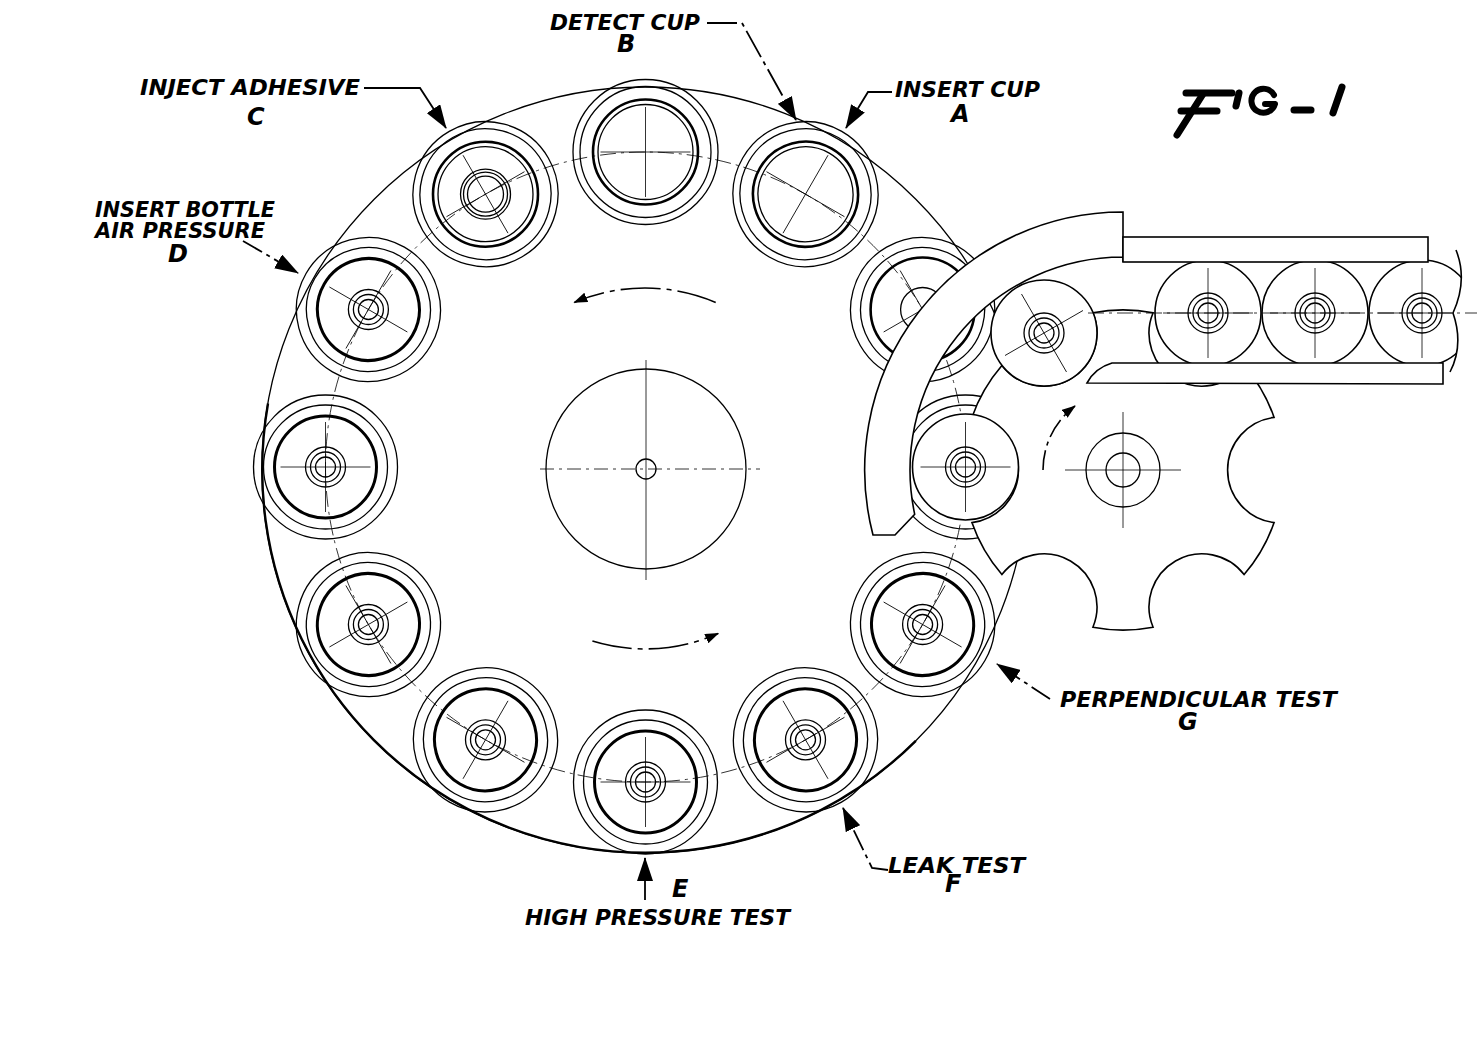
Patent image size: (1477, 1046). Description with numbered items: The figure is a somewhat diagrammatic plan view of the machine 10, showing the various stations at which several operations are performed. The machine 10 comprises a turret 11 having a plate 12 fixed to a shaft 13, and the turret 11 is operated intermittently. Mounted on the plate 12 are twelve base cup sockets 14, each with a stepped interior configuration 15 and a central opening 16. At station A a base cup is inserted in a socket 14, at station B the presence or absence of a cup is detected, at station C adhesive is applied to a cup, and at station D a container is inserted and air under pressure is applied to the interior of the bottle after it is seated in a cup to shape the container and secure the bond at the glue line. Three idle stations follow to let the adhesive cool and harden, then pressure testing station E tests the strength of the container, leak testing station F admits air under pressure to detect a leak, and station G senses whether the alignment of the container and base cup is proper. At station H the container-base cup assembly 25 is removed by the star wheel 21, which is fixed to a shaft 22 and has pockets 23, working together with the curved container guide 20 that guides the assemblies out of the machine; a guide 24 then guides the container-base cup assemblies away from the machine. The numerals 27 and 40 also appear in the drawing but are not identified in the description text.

The machine 10 is at (262, 686).
The turret 11 is at (266, 551).
The plate 12 is at (474, 465).
The shaft 13 is at (717, 414).
The base cup socket 14 is at (746, 238).
The stepped interior configuration 15 is at (956, 256).
The central opening 16 is at (883, 334).
The curved container guide 20 is at (1049, 226).
The star wheel 21 is at (1149, 483).
The shaft 22 is at (1134, 481).
The pockets 23 is at (1236, 452).
The guide 24 is at (1283, 238).
The container-base cup assembly 25 is at (338, 327).
The cup 27 is at (495, 250).
The adhesive injector nozzle 40 is at (483, 170).